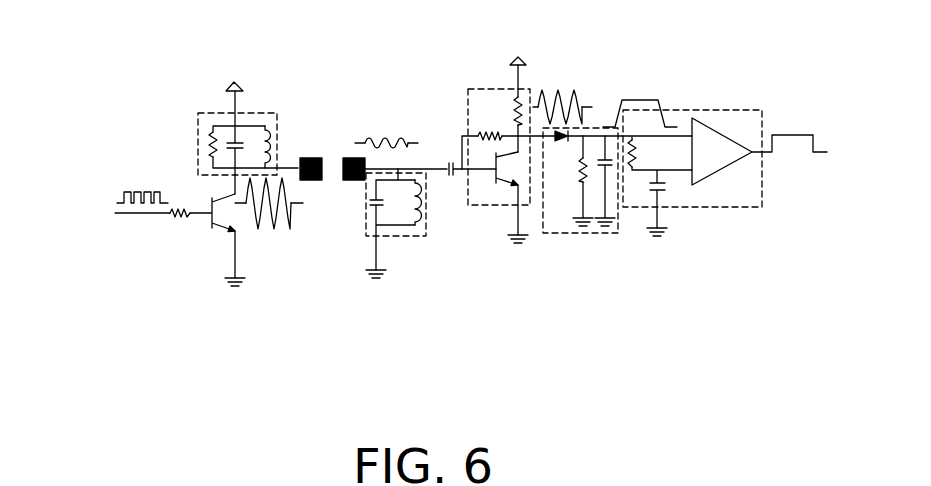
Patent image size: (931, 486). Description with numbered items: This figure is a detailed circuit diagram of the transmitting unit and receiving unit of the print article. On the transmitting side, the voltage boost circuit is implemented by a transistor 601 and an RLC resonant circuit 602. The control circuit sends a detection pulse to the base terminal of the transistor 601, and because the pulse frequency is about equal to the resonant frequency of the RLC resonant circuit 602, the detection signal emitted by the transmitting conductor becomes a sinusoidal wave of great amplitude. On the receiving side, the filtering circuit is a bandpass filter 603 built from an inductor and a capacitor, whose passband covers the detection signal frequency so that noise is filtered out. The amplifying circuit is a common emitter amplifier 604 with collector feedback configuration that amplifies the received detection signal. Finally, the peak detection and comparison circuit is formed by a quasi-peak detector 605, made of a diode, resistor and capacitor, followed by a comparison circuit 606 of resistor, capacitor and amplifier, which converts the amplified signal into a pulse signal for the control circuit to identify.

The transistor 601 is at (212, 222).
The RLC resonant circuit 602 is at (207, 113).
The bandpass filter 603 is at (425, 236).
The common emitter amplifier 604 is at (483, 110).
The quasi-peak detector 605 is at (592, 128).
The comparison circuit 606 is at (733, 135).